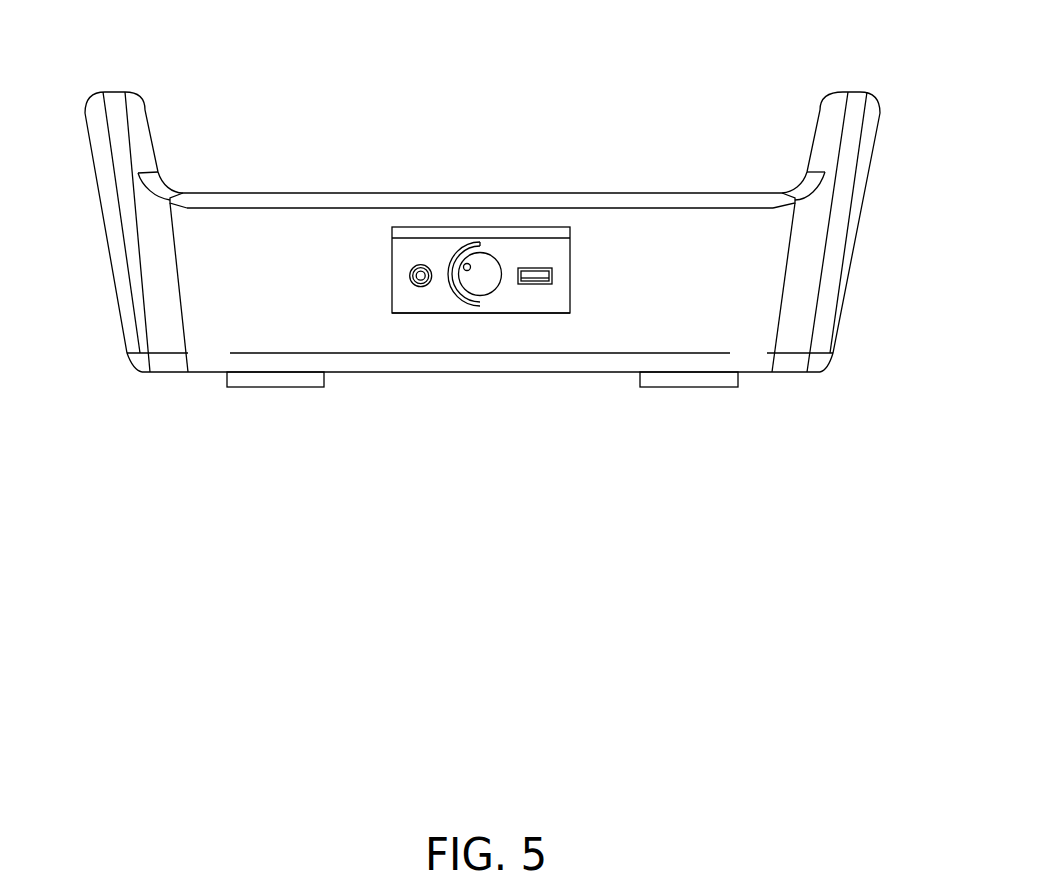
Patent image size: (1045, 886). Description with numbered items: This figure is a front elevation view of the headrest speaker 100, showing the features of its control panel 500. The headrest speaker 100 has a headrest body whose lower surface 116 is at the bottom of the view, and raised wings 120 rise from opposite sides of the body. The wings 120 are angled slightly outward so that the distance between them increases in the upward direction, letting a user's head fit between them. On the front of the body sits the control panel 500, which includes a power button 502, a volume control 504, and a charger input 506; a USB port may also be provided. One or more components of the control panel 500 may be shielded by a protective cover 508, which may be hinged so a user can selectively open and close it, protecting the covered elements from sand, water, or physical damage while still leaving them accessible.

The headrest speaker 100 is at (102, 35).
The raised wings 120 is at (142, 113).
The lower surface 116 is at (564, 470).
The control panel 500 is at (501, 334).
The power button 502 is at (410, 305).
The volume control 504 is at (457, 310).
The charger input 506 is at (551, 310).
The protective cover 508 is at (518, 216).